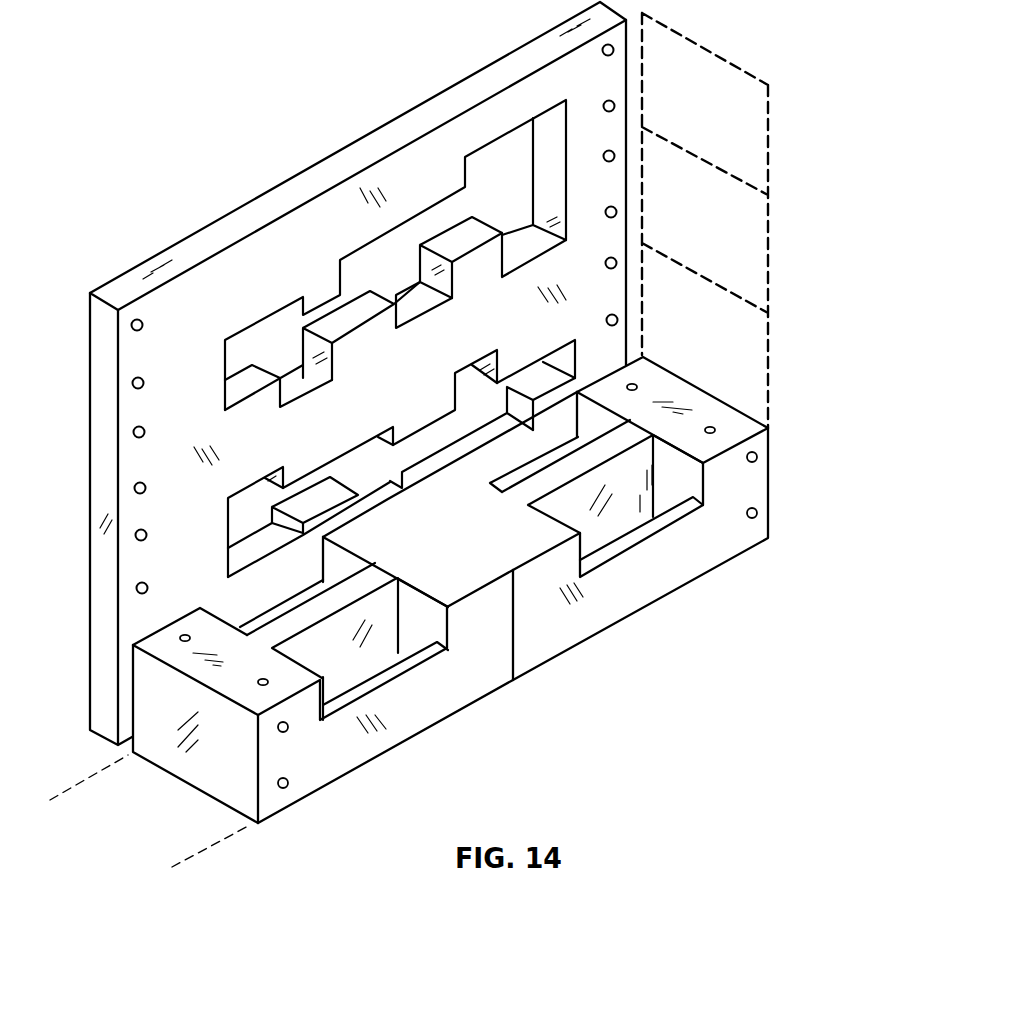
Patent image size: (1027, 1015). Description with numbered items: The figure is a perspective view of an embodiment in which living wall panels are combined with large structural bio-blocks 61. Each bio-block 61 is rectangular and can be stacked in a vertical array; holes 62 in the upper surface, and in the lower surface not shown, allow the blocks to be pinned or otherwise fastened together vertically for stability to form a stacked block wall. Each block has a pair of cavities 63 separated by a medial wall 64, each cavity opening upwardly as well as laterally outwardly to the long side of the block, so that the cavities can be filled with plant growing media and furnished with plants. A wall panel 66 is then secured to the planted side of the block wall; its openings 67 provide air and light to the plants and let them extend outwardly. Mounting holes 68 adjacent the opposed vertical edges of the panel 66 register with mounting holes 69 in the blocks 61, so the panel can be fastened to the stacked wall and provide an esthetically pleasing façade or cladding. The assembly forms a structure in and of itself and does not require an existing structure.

The bio-block 61 is at (454, 698).
The holes 62 is at (183, 636).
The cavities 63 is at (356, 672).
The medial wall 64 is at (292, 623).
The wall panel 66 is at (323, 173).
The openings 67 is at (500, 182).
The mounting holes 68 is at (617, 210).
The mounting holes 69 is at (287, 788).